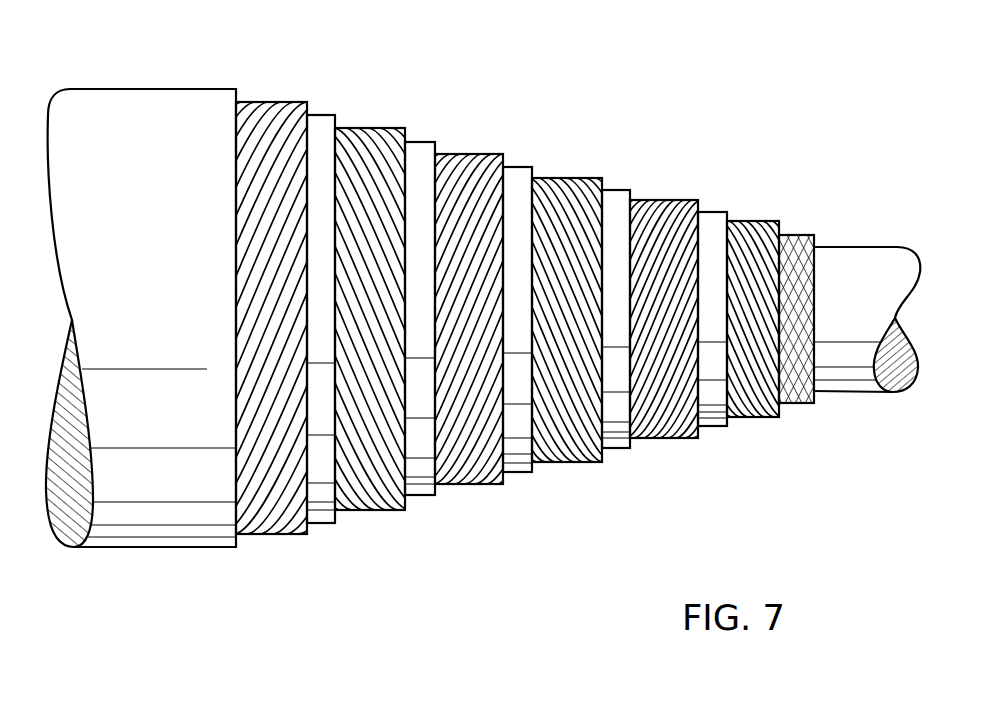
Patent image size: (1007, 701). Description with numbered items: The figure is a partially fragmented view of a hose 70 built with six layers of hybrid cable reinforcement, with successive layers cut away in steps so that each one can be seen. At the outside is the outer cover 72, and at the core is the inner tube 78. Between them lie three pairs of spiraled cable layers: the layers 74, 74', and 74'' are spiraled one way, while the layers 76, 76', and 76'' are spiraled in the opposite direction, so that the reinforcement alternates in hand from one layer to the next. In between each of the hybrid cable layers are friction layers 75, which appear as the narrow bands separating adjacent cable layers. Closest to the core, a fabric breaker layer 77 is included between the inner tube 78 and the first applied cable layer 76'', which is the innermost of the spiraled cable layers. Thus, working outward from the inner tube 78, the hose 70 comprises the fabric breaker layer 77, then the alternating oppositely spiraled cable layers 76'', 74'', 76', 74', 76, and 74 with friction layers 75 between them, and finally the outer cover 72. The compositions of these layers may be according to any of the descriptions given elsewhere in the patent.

The hose 70 is at (783, 68).
The outer cover 72 is at (97, 105).
The spiraled cable layer 74 is at (277, 276).
The spiraled cable layer 74' is at (501, 279).
The spiraled cable layer 74'' is at (687, 274).
The friction layers 75 is at (315, 508).
The spiraled cable layer 76 is at (398, 274).
The spiraled cable layer 76' is at (597, 278).
The spiraled cable layer 76'' is at (780, 276).
The fabric breaker layer 77 is at (801, 250).
The inner tube 78 is at (882, 266).